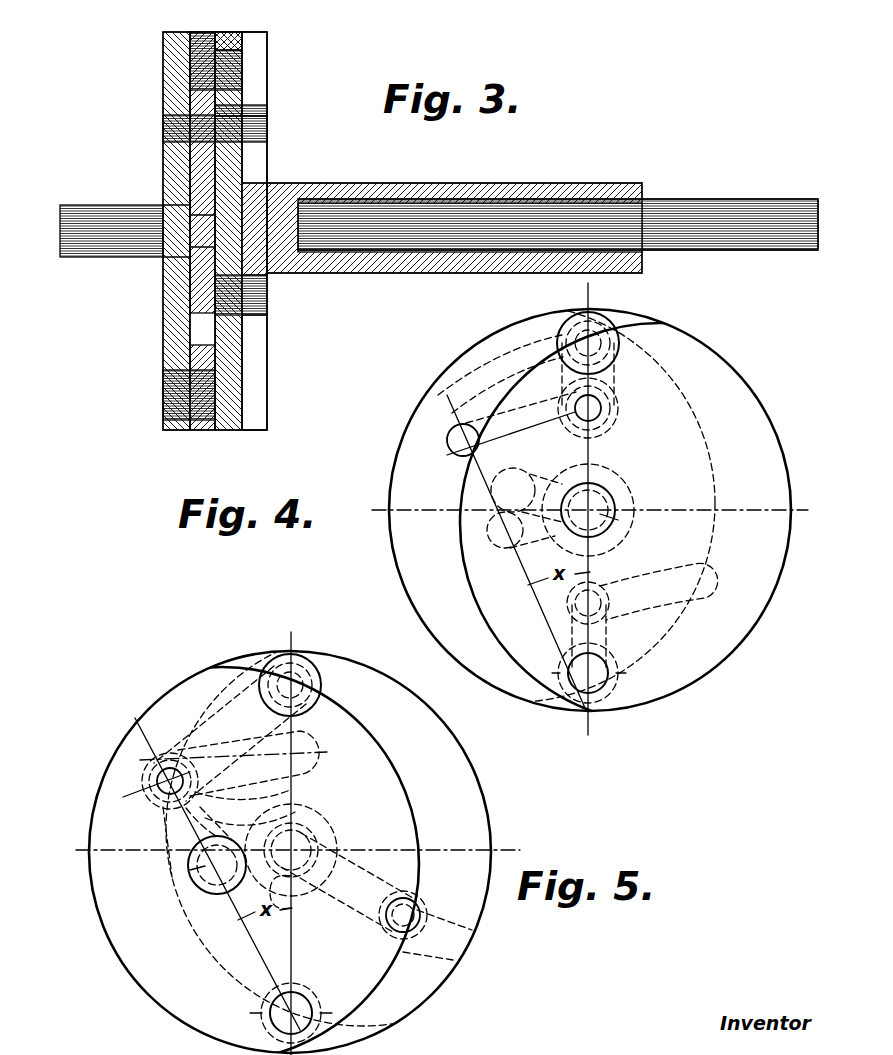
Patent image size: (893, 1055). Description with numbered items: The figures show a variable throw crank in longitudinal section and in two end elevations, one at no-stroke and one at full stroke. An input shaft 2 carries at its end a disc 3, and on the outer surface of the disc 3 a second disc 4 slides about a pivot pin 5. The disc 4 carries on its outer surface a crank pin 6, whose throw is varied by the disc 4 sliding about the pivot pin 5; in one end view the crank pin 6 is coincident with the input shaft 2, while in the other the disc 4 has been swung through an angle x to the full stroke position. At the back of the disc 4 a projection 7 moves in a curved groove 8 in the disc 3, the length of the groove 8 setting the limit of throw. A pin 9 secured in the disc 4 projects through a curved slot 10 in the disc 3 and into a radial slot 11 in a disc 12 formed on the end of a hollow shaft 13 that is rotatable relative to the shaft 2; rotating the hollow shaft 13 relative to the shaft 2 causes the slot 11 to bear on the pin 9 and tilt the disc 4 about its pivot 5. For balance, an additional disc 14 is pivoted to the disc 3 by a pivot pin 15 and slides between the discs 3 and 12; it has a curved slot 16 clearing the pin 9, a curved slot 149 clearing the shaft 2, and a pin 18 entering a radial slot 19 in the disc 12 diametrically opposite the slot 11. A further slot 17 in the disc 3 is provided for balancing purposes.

In FIG. 3, the input shaft 2 is at (722, 205).
In FIG. 5, the input shaft 2 is at (318, 852).
In FIG. 3, the disc 3 is at (200, 32).
In FIG. 3, the disc 4 is at (166, 44).
In FIG. 4, the disc 4 is at (462, 558).
In FIG. 5, the disc 4 is at (390, 776).
In FIG. 3, the pivot pin 5 is at (180, 386).
In FIG. 4, the pivot pin 5 is at (612, 672).
In FIG. 5, the pivot pin 5 is at (305, 1006).
In FIG. 3, the crank pin 6 is at (108, 220).
In FIG. 4, the crank pin 6 is at (612, 496).
In FIG. 5, the crank pin 6 is at (214, 895).
In FIG. 3, the projection 7 is at (172, 238).
In FIG. 4, the projection 7 is at (618, 520).
In FIG. 5, the projection 7 is at (190, 870).
In FIG. 4, the curved groove 8 is at (525, 513).
In FIG. 5, the curved groove 8 is at (196, 832).
In FIG. 3, the pin 9 is at (258, 128).
In FIG. 4, the pin 9 is at (602, 407).
In FIG. 5, the pin 9 is at (170, 768).
In FIG. 3, the curved slot 10 is at (166, 128).
In FIG. 4, the curved slot 10 is at (490, 414).
In FIG. 5, the curved slot 10 is at (236, 758).
In FIG. 3, the radial slot 11 is at (255, 62).
In FIG. 4, the radial slot 11 is at (612, 380).
In FIG. 5, the radial slot 11 is at (140, 790).
In FIG. 3, the disc 12 is at (240, 44).
In FIG. 3, the hollow shaft 13 is at (402, 183).
In FIG. 4, the hollow shaft 13 is at (634, 502).
In FIG. 5, the hollow shaft 13 is at (318, 828).
In FIG. 3, the additional disc 14 is at (222, 30).
In FIG. 3, the pivot pin 15 is at (238, 72).
In FIG. 4, the pivot pin 15 is at (578, 322).
In FIG. 5, the pivot pin 15 is at (306, 668).
In FIG. 3, the curved slot 16 is at (258, 112).
In FIG. 4, the curved slot 16 is at (440, 396).
In FIG. 5, the curved slot 16 is at (262, 802).
In FIG. 3, the slot 17 is at (192, 328).
In FIG. 4, the slot 17 is at (650, 586).
In FIG. 5, the slot 17 is at (338, 930).
In FIG. 3, the pin 18 is at (258, 320).
In FIG. 4, the pin 18 is at (603, 603).
In FIG. 5, the pin 18 is at (416, 906).
In FIG. 3, the radial slot 19 is at (256, 380).
In FIG. 4, the radial slot 19 is at (612, 640).
In FIG. 5, the radial slot 19 is at (456, 918).
In FIG. 3, the curved slot 149 is at (268, 190).
In FIG. 4, the curved slot 149 is at (560, 478).
In FIG. 5, the curved slot 149 is at (330, 825).